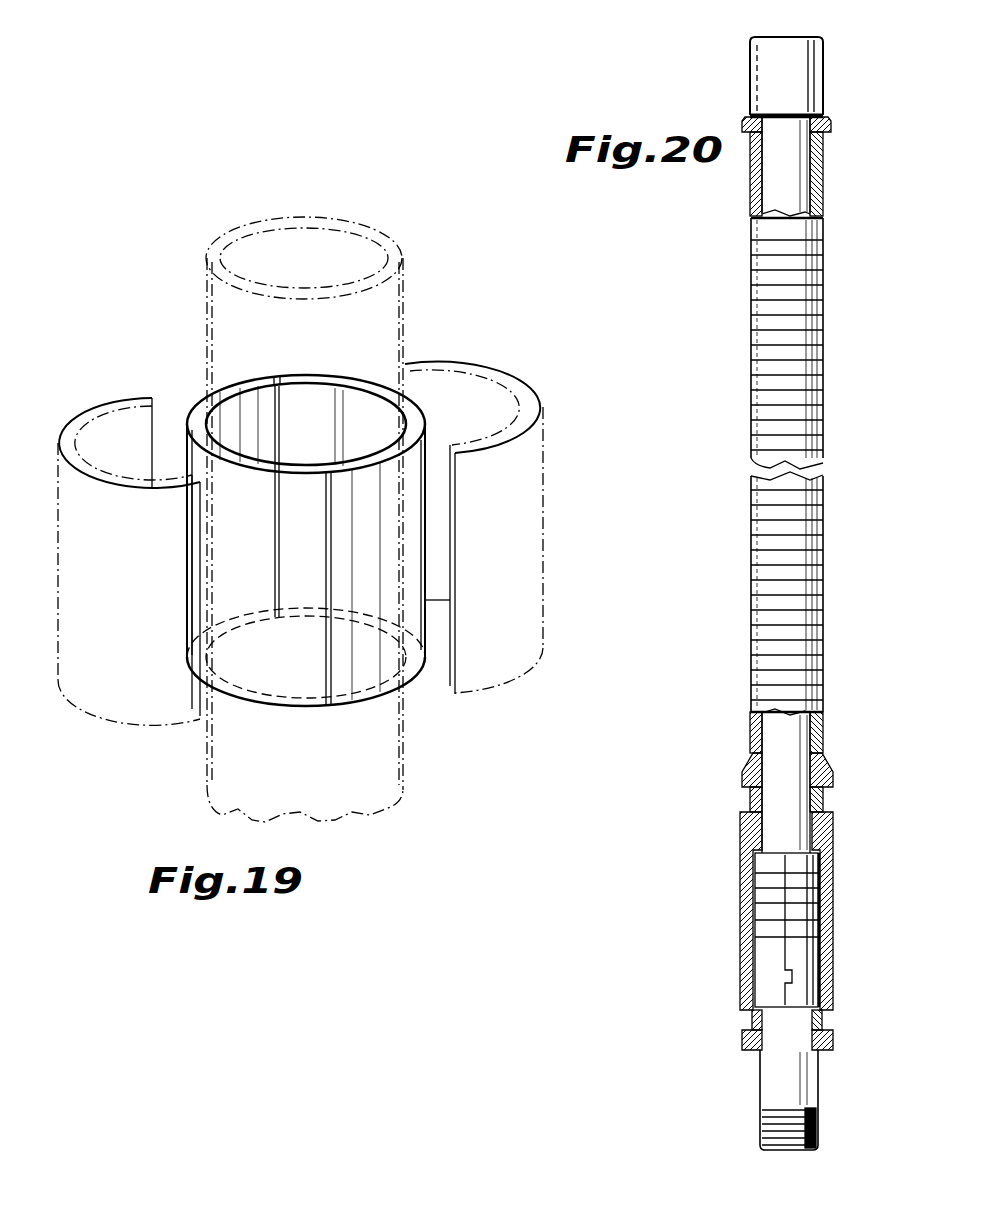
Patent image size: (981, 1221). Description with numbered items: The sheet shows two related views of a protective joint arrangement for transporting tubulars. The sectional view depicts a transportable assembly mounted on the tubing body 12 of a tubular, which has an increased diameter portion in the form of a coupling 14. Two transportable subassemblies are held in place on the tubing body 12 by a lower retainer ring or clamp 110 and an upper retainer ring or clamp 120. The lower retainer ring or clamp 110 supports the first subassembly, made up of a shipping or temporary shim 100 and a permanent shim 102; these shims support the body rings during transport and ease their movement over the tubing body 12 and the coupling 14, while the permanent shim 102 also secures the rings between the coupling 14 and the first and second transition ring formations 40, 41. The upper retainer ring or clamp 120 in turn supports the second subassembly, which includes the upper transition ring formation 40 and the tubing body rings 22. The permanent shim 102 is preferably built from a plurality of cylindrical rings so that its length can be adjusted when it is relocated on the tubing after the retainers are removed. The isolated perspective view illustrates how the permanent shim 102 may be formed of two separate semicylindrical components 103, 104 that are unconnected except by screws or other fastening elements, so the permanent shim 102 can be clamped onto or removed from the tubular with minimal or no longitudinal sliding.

In FIG. 20, the tubing body 12 is at (792, 182).
In FIG. 20, the coupling 14 is at (815, 92).
In FIG. 20, the tubing body rings 22 is at (812, 279).
In FIG. 20, the first or upper transition ring formation 40 is at (833, 762).
In FIG. 20, the second transition ring formation 41 is at (830, 137).
In FIG. 20, the temporary shim 100 is at (768, 953).
In FIG. 19, the permanent shim 102 is at (372, 690).
In FIG. 20, the permanent shim 102 is at (807, 892).
In FIG. 19, the semicylindrical component 103 is at (142, 730).
In FIG. 19, the semicylindrical component 104 is at (493, 688).
In FIG. 20, the lower retainer ring or clamp 110 is at (825, 1020).
In FIG. 20, the upper retainer ring or clamp 120 is at (825, 803).